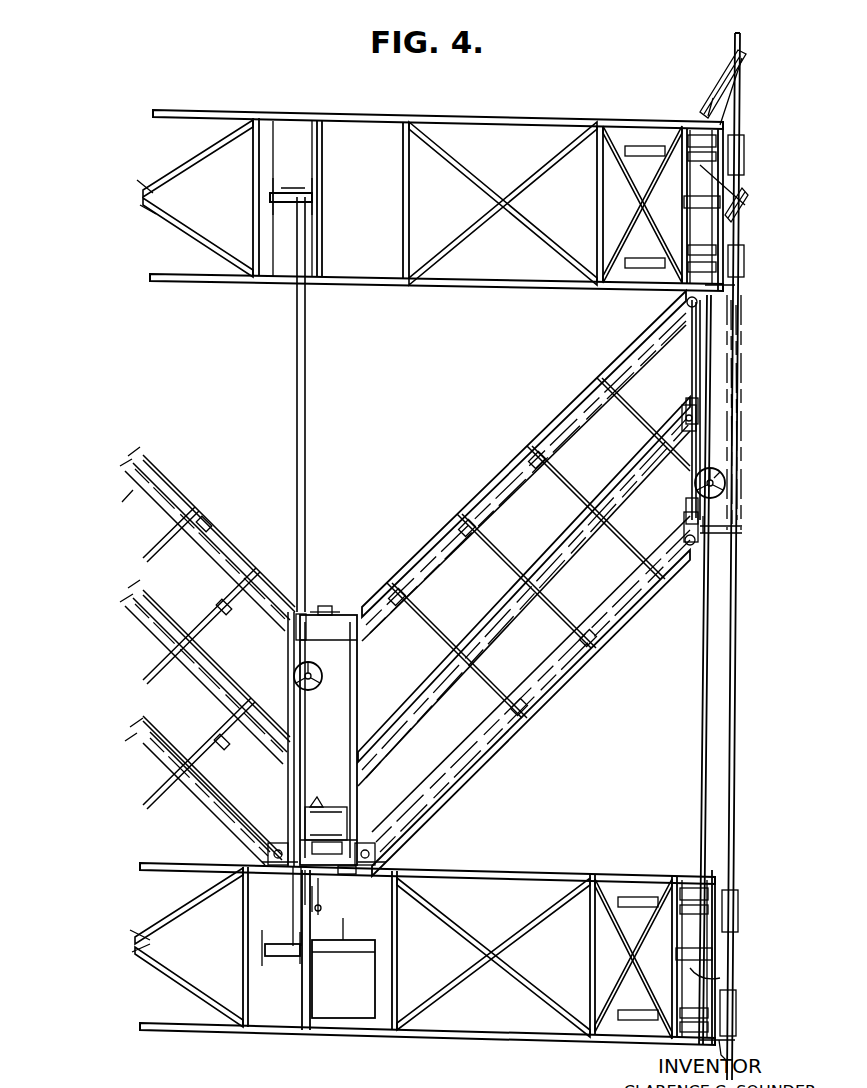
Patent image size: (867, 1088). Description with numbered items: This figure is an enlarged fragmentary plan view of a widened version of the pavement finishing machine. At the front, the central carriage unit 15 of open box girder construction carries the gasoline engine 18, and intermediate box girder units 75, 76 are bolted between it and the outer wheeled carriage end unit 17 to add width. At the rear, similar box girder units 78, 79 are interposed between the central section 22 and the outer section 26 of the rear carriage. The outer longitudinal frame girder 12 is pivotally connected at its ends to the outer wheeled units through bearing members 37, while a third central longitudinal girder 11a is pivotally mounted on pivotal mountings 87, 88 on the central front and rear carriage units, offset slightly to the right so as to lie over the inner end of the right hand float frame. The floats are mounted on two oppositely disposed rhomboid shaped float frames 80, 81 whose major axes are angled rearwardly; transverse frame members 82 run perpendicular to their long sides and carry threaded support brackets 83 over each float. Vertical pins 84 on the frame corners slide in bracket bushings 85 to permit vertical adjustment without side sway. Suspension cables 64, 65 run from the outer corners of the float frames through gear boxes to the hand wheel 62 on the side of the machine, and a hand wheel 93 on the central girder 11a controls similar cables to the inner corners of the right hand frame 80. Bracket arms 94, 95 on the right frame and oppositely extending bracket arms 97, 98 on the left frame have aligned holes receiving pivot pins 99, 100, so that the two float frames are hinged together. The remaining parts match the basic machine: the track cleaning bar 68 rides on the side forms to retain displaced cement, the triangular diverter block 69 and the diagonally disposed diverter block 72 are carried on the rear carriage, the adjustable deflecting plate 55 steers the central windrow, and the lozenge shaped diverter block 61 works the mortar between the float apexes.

The central section of rear carriage 22 is at (362, 117).
The box girder unit 78 is at (212, 115).
The pivotal mounting 88 is at (284, 192).
The box girder unit 79 is at (519, 124).
The outer section of rear carriage 26 is at (656, 124).
The diagonally disposed windrow diverter block 72 is at (748, 70).
The triangular side windrow diverter block 69 is at (748, 213).
The longitudinal frame girder 12 is at (707, 636).
The track cleaning bar 68 is at (735, 412).
The cable 64 is at (700, 372).
The hand wheel 62 is at (722, 486).
The cable 65 is at (732, 530).
The central longitudinal frame girder 11a is at (306, 380).
The bracket arm 98 is at (346, 617).
The pivot pin 100 is at (326, 606).
The bracket arm 94 is at (314, 629).
The hand wheel 93 is at (311, 686).
The lozenge shaped diverter block 61 is at (330, 810).
The pivot pin 99 is at (336, 845).
The vertical pin 84 is at (378, 858).
The bracket bushing 85 is at (370, 866).
The bracket arm 97 is at (347, 866).
The bracket arm 95 is at (305, 858).
The deflecting plate 55 is at (321, 914).
The threaded support bracket 83 is at (398, 603).
The transverse frame member 82 is at (396, 743).
The rhomboid shaped float frame 81 is at (524, 728).
The rhomboid shaped float frame 80 is at (168, 777).
The central carriage unit 15 is at (305, 1040).
The box girder unit 75 is at (186, 1033).
The pivotal mounting 87 is at (283, 957).
The gasoline engine 18 is at (343, 968).
The box girder unit 76 is at (526, 877).
The carriage end unit 17 is at (640, 878).
The bearing member 37 is at (720, 978).